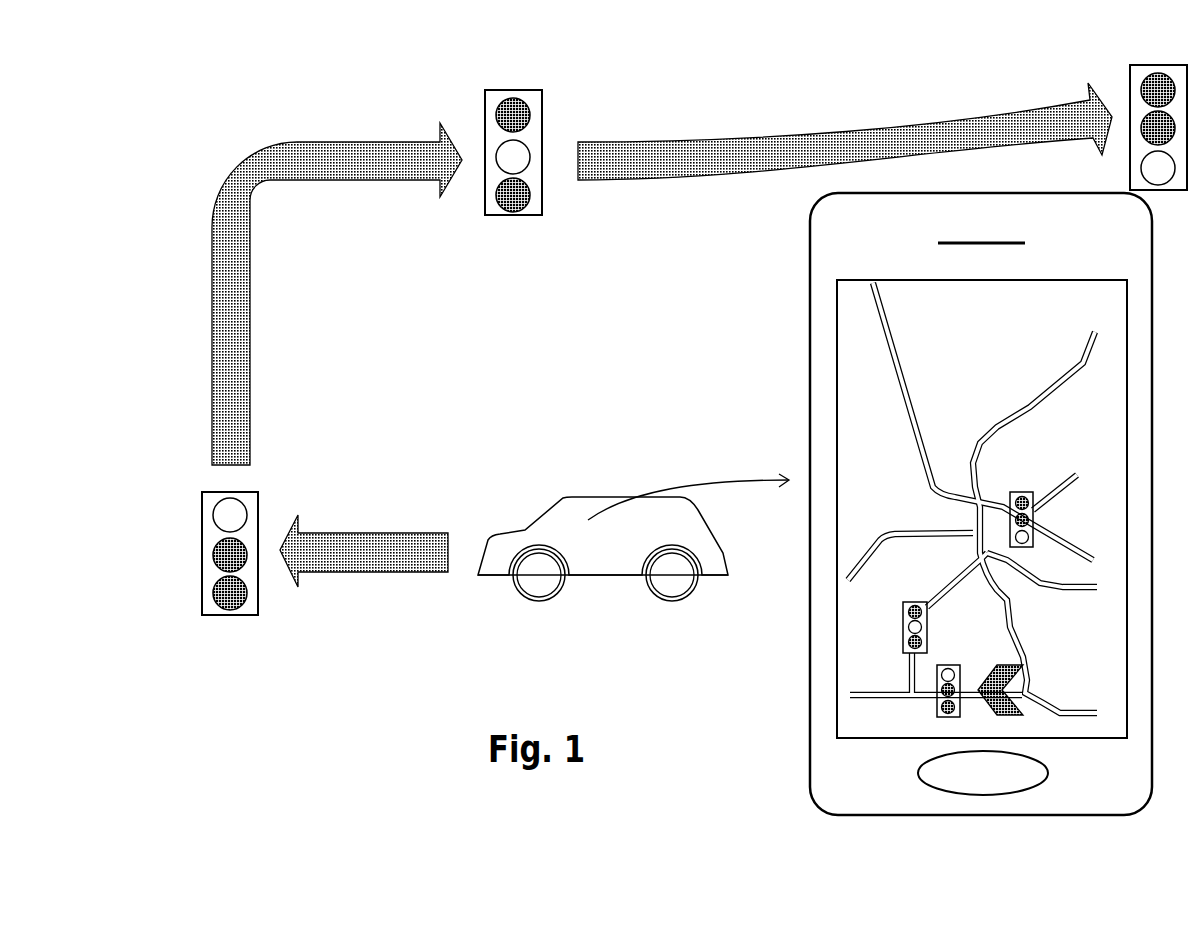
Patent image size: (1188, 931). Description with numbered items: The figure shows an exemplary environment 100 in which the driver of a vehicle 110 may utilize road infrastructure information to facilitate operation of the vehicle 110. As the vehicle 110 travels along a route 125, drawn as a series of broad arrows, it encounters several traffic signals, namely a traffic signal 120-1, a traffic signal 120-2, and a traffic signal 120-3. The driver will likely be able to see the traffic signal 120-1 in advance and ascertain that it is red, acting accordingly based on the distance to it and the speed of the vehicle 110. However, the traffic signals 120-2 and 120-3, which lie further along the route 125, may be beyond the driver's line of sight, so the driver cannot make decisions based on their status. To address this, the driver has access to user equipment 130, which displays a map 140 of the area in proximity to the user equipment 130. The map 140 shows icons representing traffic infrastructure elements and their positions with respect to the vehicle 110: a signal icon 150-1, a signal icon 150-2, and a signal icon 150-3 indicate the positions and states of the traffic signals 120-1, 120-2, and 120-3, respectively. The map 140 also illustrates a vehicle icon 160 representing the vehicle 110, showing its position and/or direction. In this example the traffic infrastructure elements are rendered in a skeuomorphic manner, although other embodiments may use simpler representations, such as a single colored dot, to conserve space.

The environment 100 is at (218, 106).
The vehicle 110 is at (593, 497).
The traffic signal 120-1 is at (233, 618).
The traffic signal 120-2 is at (547, 100).
The traffic signal 120-3 is at (1130, 174).
The route 125 is at (252, 315).
The user equipment 130 is at (810, 316).
The map 140 is at (867, 404).
The signal icon 150-1 is at (955, 665).
The signal icon 150-2 is at (912, 600).
The signal icon 150-3 is at (1027, 490).
The vehicle icon 160 is at (1023, 668).